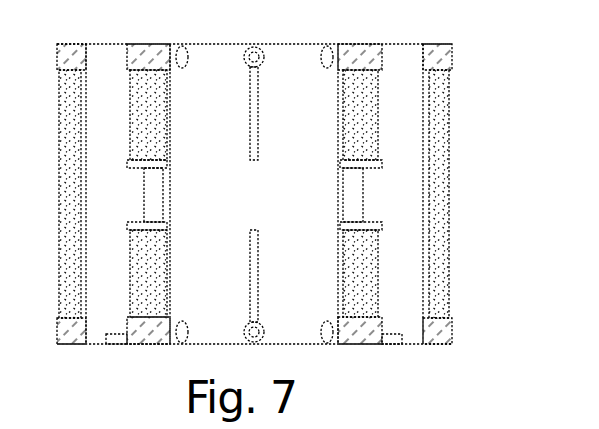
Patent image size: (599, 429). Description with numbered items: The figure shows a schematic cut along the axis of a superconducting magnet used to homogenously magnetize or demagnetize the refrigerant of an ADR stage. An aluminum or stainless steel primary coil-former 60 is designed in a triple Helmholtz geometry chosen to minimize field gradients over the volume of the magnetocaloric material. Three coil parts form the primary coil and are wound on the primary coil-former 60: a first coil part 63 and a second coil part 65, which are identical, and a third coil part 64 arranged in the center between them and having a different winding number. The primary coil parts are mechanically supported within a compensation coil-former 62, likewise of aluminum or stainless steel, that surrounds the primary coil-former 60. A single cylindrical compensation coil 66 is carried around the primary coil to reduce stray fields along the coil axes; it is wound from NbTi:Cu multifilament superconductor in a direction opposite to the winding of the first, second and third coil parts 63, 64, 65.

The primary coil-former 60 is at (366, 57).
The compensation coil-former 62 is at (444, 60).
The first coil part 63 is at (370, 107).
The third coil part 64 is at (354, 193).
The second coil part 65 is at (362, 283).
The compensation coil 66 is at (445, 220).